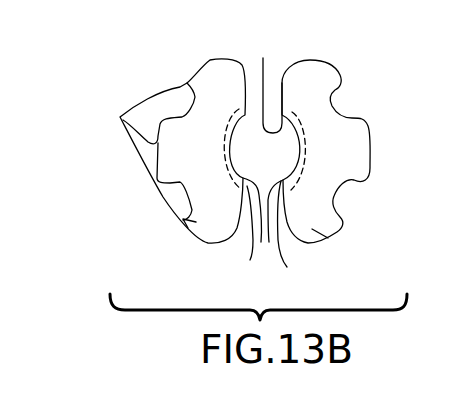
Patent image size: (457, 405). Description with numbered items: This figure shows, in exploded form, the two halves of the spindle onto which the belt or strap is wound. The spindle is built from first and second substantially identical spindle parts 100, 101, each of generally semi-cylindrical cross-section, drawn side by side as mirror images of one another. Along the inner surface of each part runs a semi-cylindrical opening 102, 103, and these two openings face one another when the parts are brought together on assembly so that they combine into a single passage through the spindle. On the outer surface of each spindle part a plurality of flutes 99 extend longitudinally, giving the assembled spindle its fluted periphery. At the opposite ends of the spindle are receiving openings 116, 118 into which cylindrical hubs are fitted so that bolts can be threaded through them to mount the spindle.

The flutes 99 is at (136, 155).
The first spindle part 100 is at (208, 58).
The second spindle part 101 is at (310, 244).
The semi-cylindrical opening 102 is at (261, 242).
The semi-cylindrical opening 103 is at (263, 58).
The receiving opening 116 is at (325, 232).
The receiving opening 118 is at (269, 242).